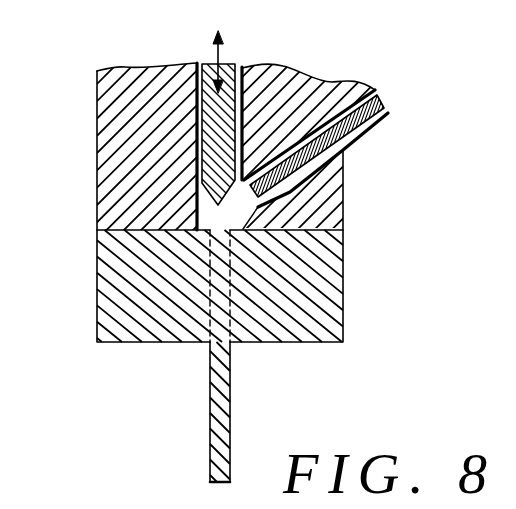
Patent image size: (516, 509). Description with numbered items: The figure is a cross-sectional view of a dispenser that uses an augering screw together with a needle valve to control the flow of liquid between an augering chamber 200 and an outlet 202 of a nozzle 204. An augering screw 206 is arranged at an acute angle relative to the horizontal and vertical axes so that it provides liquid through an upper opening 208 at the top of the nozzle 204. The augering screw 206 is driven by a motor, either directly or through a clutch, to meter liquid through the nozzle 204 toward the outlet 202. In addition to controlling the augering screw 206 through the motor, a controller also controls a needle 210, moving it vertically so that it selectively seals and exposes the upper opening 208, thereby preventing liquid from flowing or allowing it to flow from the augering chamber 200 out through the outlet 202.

The augering chamber 200 is at (371, 84).
The outlet 202 is at (219, 483).
The nozzle 204 is at (345, 292).
The augering screw 206 is at (382, 98).
The upper opening 208 is at (215, 226).
The needle 210 is at (232, 66).